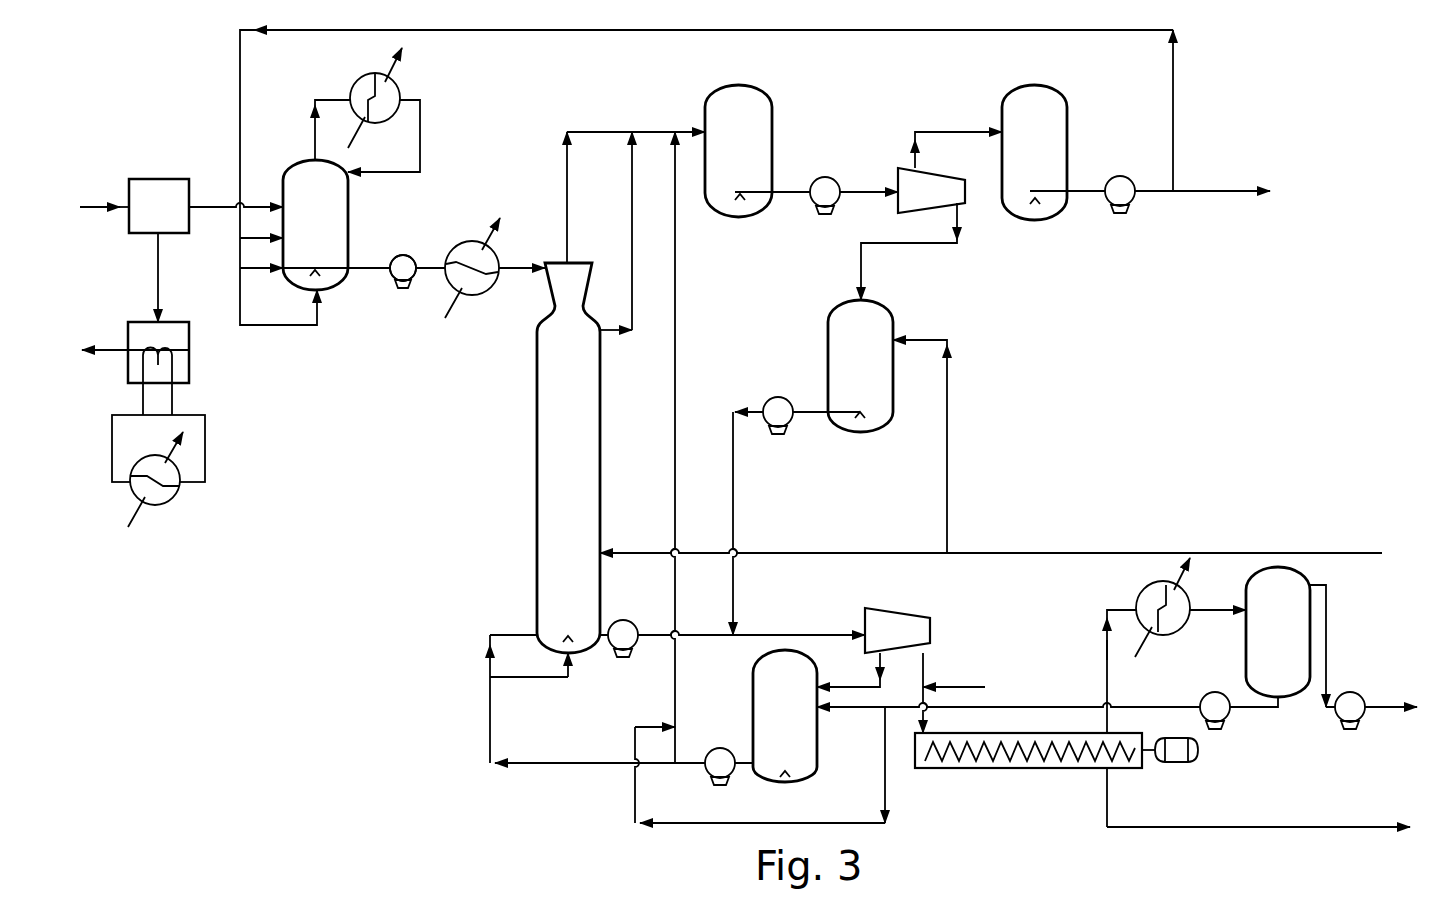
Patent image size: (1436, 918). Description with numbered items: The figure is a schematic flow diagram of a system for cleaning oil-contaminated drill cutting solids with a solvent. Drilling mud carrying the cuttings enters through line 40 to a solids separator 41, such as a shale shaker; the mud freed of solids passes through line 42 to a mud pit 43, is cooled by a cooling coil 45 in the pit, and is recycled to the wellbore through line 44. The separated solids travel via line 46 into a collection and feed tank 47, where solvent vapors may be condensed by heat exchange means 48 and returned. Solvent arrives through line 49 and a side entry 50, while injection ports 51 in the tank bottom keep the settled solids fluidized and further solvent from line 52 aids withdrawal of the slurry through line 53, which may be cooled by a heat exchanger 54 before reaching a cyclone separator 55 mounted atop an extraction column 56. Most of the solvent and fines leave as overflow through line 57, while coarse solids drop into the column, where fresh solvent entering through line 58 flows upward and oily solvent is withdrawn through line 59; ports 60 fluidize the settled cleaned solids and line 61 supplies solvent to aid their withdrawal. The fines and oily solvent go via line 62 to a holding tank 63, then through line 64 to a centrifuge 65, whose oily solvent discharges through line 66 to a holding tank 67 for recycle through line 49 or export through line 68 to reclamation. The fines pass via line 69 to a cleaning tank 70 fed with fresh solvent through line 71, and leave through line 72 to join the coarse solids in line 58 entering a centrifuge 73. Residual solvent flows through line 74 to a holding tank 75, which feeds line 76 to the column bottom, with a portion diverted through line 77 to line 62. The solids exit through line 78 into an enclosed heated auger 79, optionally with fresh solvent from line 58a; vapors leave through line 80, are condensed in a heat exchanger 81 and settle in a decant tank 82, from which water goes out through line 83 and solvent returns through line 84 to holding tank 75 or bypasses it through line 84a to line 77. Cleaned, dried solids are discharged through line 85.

The line 40 is at (97, 207).
The solids separator 41 is at (160, 178).
The line 42 is at (158, 274).
The mud pit 43 is at (189, 350).
The line 44 is at (106, 352).
The cooling coil 45 is at (172, 397).
The line 46 is at (208, 208).
The collection and feed tank 47 is at (348, 212).
The heat exchange means 48 is at (398, 76).
The line 49 is at (283, 30).
The side entry 50 is at (240, 240).
The injection ports 51 is at (320, 296).
The line 52 is at (240, 270).
The line 53 is at (428, 268).
The heat exchanger 54 is at (476, 242).
The cyclone separator 55 is at (545, 295).
The extraction column 56 is at (537, 482).
The line 57 is at (575, 132).
The line 58 is at (620, 553).
The line 58a is at (975, 687).
The line 59 is at (632, 220).
The ports 60 is at (570, 656).
The line 61 is at (490, 633).
The line 62 is at (632, 132).
The holding tank 63 is at (772, 100).
The line 64 is at (855, 190).
The centrifuge 65 is at (965, 195).
The line 66 is at (925, 132).
The holding tank 67 is at (1067, 100).
The line 68 is at (1190, 190).
The line 69 is at (861, 250).
The cleaning tank 70 is at (828, 334).
The line 71 is at (947, 408).
The line 72 is at (733, 505).
The centrifuge 73 is at (915, 610).
The line 74 is at (848, 687).
The holding tank 75 is at (817, 762).
The line 76 is at (690, 763).
The line 77 is at (675, 372).
The line 78 is at (923, 668).
The enclosed heated auger 79 is at (955, 768).
The line 80 is at (1107, 625).
The heat exchanger 81 is at (1142, 592).
The decant tank 82 is at (1246, 632).
The line 83 is at (1365, 707).
The line 84 is at (1075, 707).
The line 84a is at (888, 758).
The line 85 is at (1107, 798).